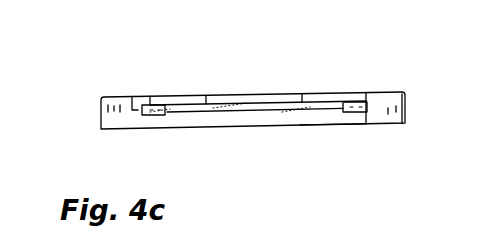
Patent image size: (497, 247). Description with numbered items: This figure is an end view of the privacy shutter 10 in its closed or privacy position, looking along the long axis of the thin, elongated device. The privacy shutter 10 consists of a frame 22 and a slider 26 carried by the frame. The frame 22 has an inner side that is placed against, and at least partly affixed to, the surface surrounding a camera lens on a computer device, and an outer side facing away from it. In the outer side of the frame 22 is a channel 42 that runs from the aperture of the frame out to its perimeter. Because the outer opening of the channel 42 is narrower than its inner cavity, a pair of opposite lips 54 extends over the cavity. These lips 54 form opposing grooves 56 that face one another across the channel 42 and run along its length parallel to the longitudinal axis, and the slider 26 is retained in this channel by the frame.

The privacy shutter 10 is at (84, 94).
The frame 22 is at (233, 125).
The slider 26 is at (265, 108).
The channel 42 is at (335, 115).
The lips 54 is at (148, 102).
The grooves 56 is at (137, 110).